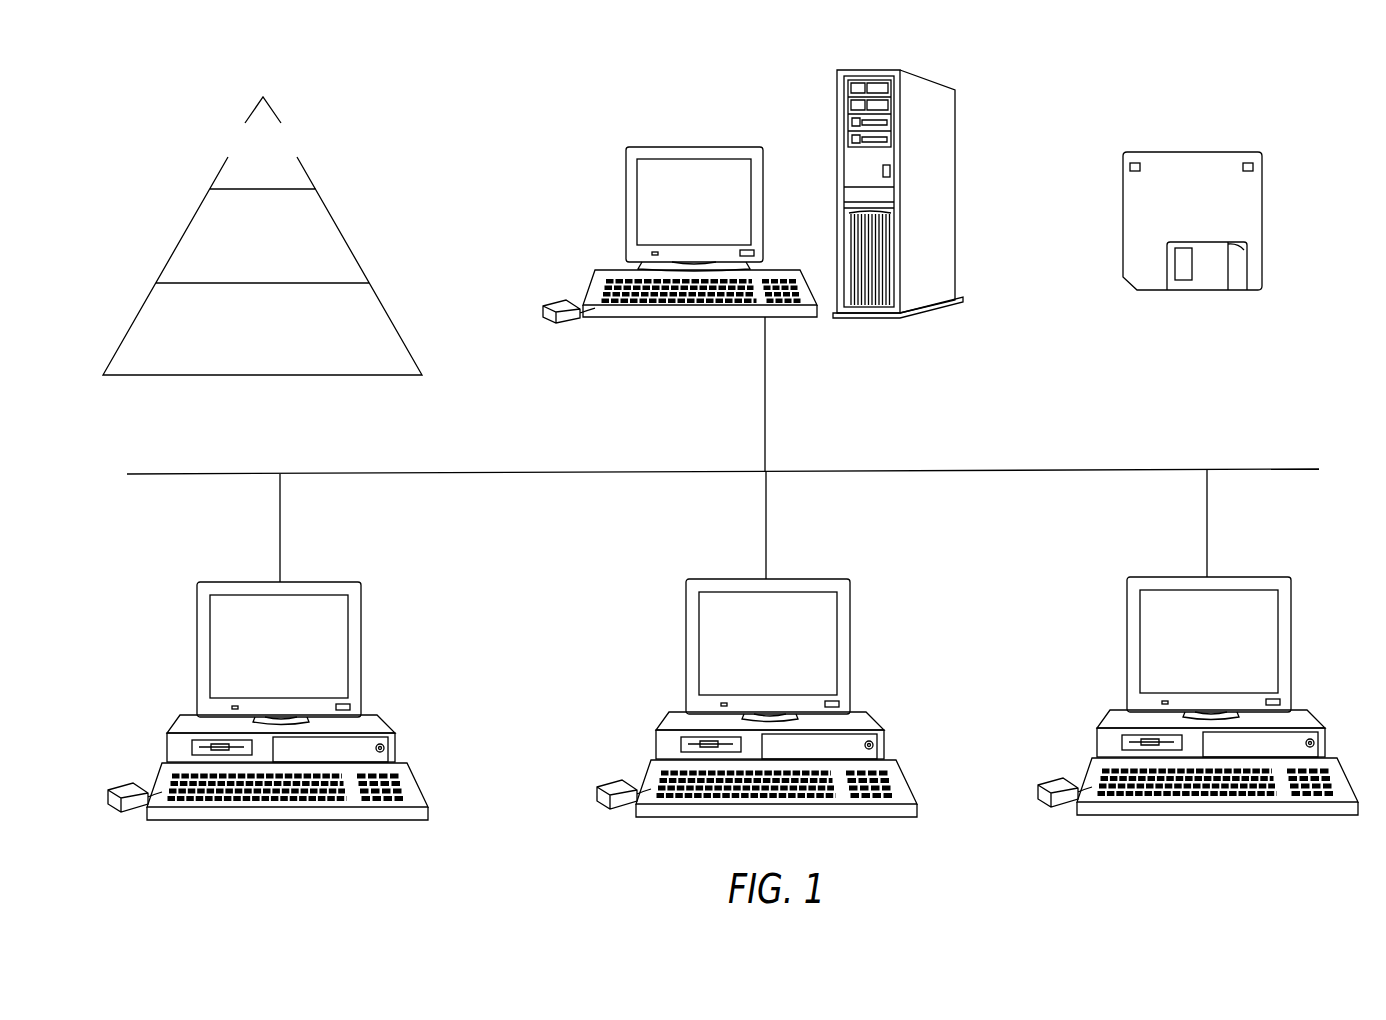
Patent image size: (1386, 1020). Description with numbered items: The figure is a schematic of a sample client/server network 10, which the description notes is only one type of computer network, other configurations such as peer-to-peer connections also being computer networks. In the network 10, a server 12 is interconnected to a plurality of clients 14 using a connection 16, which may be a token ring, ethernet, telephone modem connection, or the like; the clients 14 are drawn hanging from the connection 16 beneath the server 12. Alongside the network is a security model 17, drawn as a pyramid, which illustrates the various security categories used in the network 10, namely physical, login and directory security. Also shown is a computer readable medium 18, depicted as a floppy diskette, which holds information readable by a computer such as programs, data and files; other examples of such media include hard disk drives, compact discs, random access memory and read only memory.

The client/server network 10 is at (1153, 74).
The server 12 is at (627, 197).
The clients 14 is at (361, 651).
The connection 16 is at (880, 472).
The security model 17 is at (378, 140).
The computer readable medium 18 is at (1262, 211).